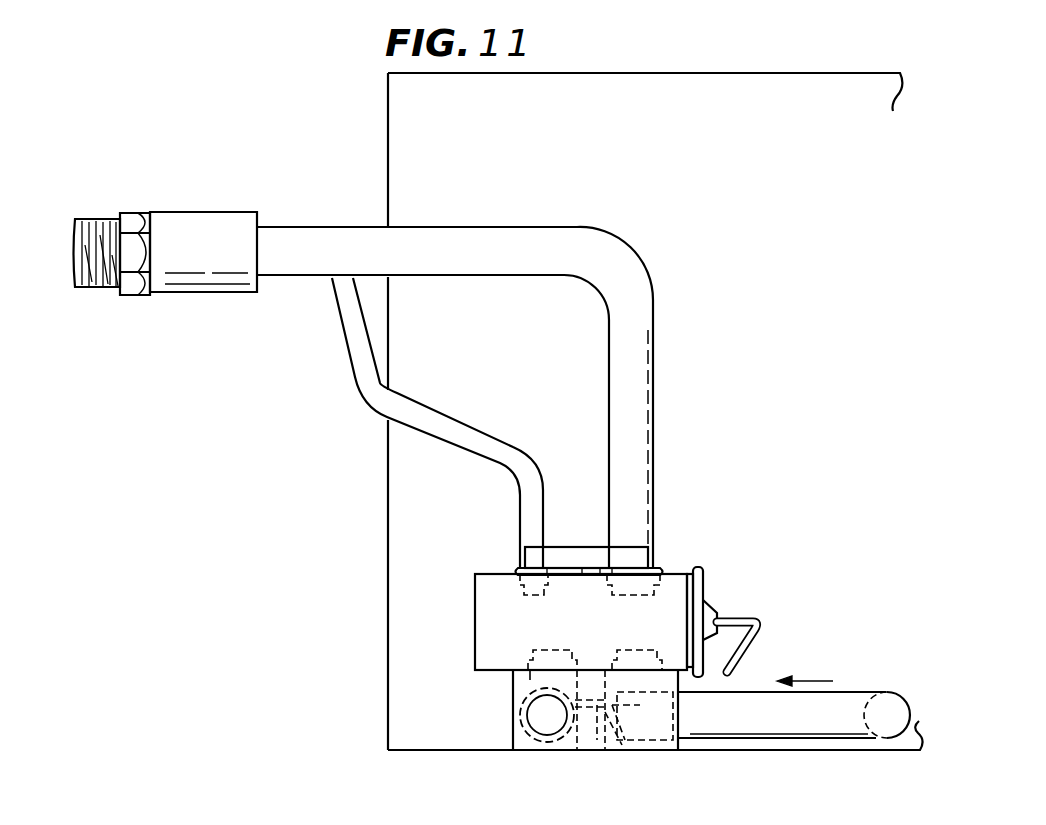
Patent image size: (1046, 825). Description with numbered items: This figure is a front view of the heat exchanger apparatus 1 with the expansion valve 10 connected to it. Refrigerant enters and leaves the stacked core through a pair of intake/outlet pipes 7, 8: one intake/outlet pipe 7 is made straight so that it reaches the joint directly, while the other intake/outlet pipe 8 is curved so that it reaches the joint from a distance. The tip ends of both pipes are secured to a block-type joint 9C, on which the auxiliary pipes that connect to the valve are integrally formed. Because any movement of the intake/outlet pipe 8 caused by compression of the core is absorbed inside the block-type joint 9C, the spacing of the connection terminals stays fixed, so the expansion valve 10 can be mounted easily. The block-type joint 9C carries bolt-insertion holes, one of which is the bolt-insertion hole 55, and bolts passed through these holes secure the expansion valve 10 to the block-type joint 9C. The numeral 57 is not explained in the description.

The heat exchanger apparatus 1 is at (368, 125).
The intake/outlet pipe 7 is at (505, 742).
The intake/outlet pipe 8 is at (812, 728).
The block-type joint 9C is at (588, 742).
The expansion valve 10 is at (675, 588).
The bolt-insertion hole 55 is at (583, 681).
The nozzle passage 57 is at (608, 736).